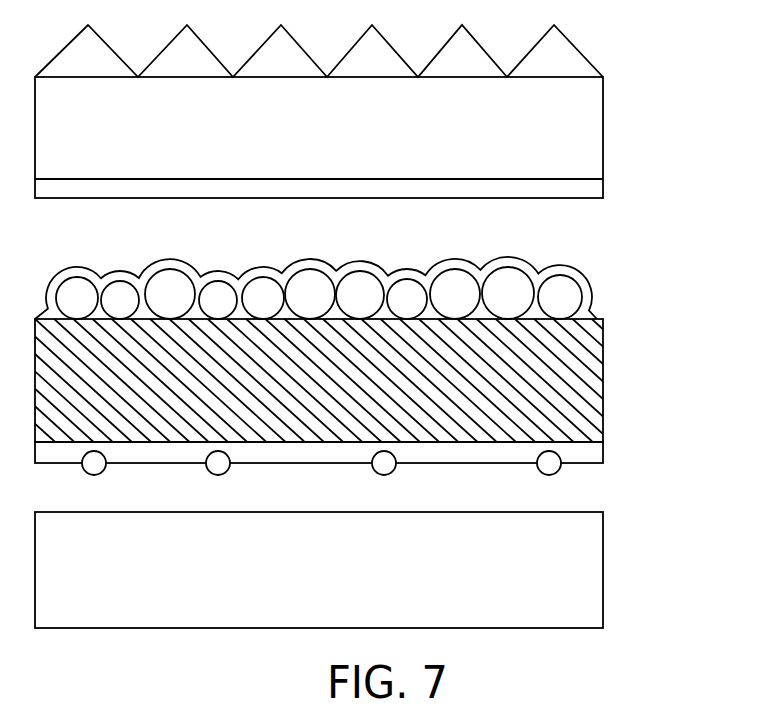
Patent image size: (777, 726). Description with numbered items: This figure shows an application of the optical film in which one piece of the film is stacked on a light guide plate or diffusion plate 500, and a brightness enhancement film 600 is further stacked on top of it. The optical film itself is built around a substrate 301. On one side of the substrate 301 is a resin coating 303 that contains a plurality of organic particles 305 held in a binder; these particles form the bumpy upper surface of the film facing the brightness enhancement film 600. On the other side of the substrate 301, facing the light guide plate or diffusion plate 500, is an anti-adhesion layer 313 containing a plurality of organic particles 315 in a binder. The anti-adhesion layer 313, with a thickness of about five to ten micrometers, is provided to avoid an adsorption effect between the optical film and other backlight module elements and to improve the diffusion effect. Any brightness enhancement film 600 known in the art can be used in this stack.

The brightness enhancement film 600 is at (580, 130).
The organic particles 305 is at (563, 280).
The resin coating 303 is at (500, 255).
The substrate 301 is at (573, 378).
The anti-adhesion layer 313 is at (560, 474).
The organic particles 315 is at (552, 467).
The light guide plate or diffusion plate 500 is at (572, 573).